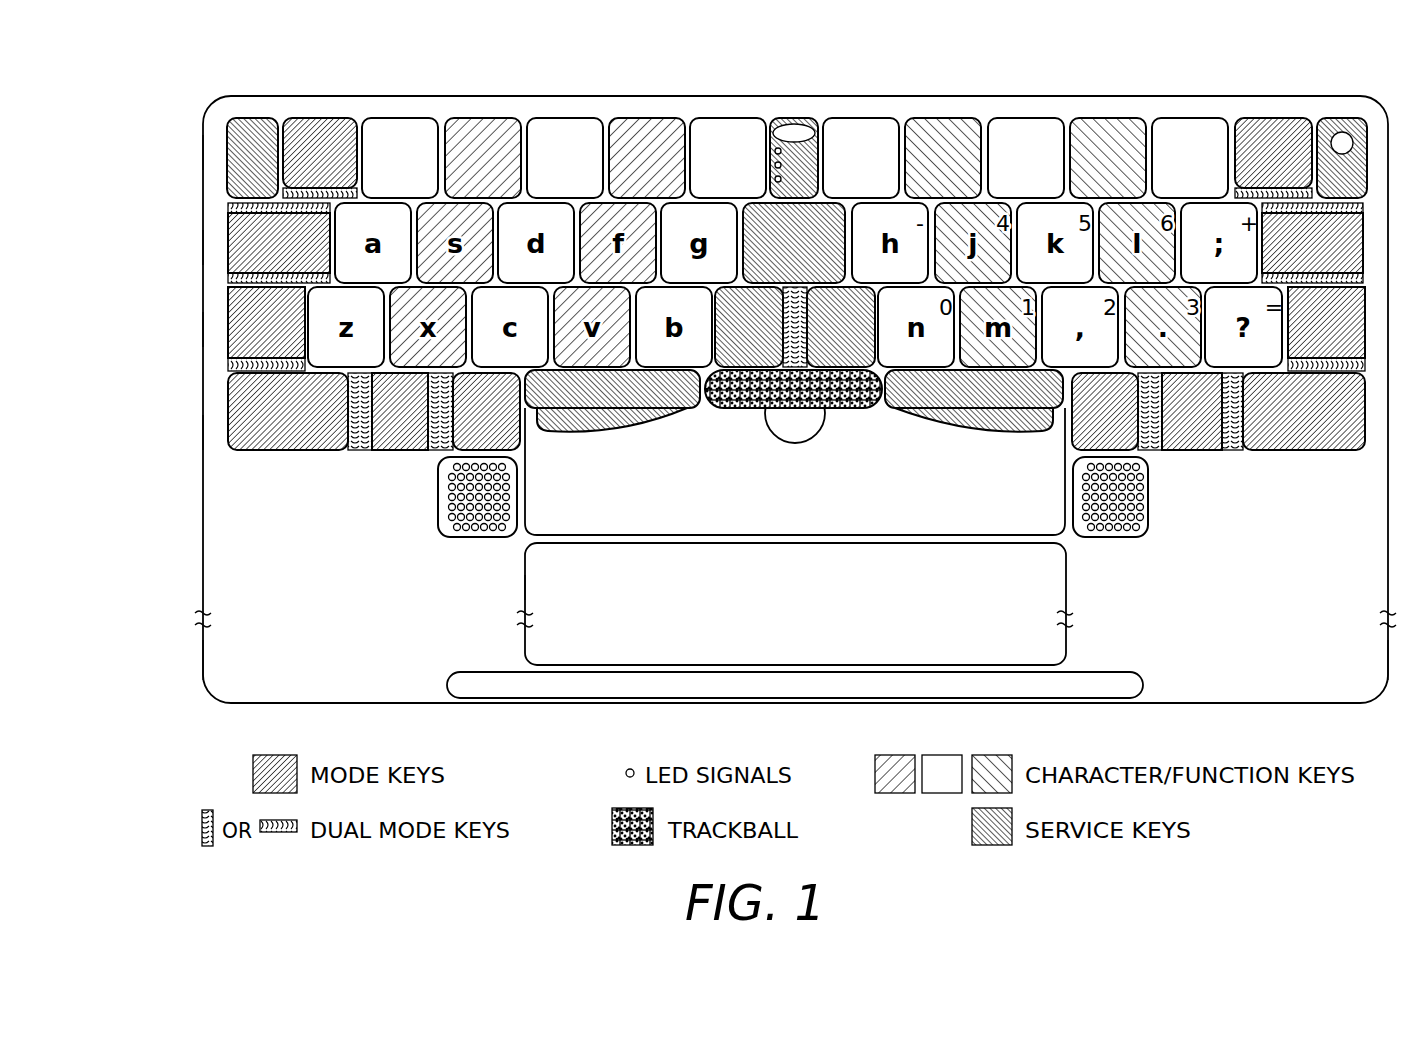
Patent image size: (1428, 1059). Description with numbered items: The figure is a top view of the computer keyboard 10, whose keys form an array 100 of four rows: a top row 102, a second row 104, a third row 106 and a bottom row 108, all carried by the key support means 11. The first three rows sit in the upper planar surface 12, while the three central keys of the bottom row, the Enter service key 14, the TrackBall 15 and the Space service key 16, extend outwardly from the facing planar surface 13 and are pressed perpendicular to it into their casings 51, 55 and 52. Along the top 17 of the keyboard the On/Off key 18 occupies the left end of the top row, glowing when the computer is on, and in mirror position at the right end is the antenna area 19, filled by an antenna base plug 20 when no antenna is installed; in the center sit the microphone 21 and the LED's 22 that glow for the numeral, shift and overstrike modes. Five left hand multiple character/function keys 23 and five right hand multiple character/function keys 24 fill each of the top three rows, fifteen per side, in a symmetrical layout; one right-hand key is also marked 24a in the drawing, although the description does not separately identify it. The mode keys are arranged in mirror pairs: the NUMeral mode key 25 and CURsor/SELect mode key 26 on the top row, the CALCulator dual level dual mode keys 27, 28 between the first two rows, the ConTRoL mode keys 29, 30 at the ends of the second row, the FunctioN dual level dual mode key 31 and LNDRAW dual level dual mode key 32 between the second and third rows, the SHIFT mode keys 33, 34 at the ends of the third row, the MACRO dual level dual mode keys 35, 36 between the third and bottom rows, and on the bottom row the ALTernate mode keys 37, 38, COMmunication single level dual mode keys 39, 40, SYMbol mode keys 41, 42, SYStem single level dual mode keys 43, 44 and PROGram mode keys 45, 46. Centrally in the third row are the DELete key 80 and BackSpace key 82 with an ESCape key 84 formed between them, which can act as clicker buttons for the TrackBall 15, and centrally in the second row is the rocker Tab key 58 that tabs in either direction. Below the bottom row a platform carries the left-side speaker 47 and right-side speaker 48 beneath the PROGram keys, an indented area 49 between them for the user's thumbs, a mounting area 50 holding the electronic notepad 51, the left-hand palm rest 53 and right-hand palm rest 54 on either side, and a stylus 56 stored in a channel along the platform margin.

The keyboard 10 is at (212, 100).
The key support means 11 is at (252, 104).
The upper planar surface 12 is at (300, 110).
The facing planar surface 13 is at (620, 441).
The Enter service key 14 is at (657, 410).
The TrackBall 15 is at (790, 428).
The Space service key 16 is at (980, 428).
The top of the keyboard 17 is at (322, 108).
The On/Off key 18 is at (230, 176).
The antenna area 19 is at (1367, 128).
The antenna base plug 20 is at (1353, 144).
The microphone 21 is at (789, 124).
The LED's 22 is at (818, 140).
The left hand multiple character/function keys 23 is at (760, 110).
The right hand multiple character/function keys 24 is at (1227, 110).
The p key 24a is at (1225, 132).
The NUMeral mode key 25 is at (343, 120).
The CURsor/SELect mode key 26 is at (1273, 135).
The CALCulator dual level dual mode key 27 is at (232, 206).
The CALCulator dual level dual mode key 28 is at (1363, 208).
The ConTRoL mode key 29 is at (232, 276).
The ConTRoL mode key 30 is at (1363, 246).
The FunctioN dual level dual mode key 31 is at (232, 290).
The LNDRAW dual level dual mode key 32 is at (1363, 281).
The SHIFT mode key 33 is at (232, 351).
The SHIFT mode key 34 is at (1365, 321).
The MACRO dual level dual mode key 35 is at (232, 368).
The MACRO dual level dual mode key 36 is at (1366, 368).
The ALTernate mode key 37 is at (232, 401).
The ALTernate mode key 38 is at (1366, 406).
The COMmunication single level dual mode key 39 is at (357, 451).
The COMmunication single level dual mode key 40 is at (1231, 451).
The SYMbol mode key 41 is at (387, 451).
The SYMbol mode key 42 is at (1187, 451).
The SYStem single level dual mode key 43 is at (438, 451).
The SYStem single level dual mode key 44 is at (1152, 451).
The PROGram mode key 45 is at (453, 451).
The PROGram mode key 46 is at (1142, 451).
The left-side speaker 47 is at (440, 529).
The right-side speaker 48 is at (1140, 528).
The indented area 49 is at (1050, 530).
The mounting area 50 is at (1066, 590).
The electronic notepad 51 is at (525, 586).
The casing 52 is at (893, 409).
The left-hand palm rest 53 is at (206, 660).
The right-hand palm rest 54 is at (1363, 664).
The casing 55 is at (717, 398).
The stylus 56 is at (1105, 689).
The rocker Tab key 58 is at (768, 203).
The DELete key 80 is at (752, 358).
The BackSpace key 82 is at (822, 358).
The ESCape key 84 is at (797, 358).
The array of keys 100 is at (131, 432).
The top row 102 is at (223, 152).
The second row 104 is at (223, 247).
The third row 106 is at (223, 329).
The bottom row 108 is at (223, 432).